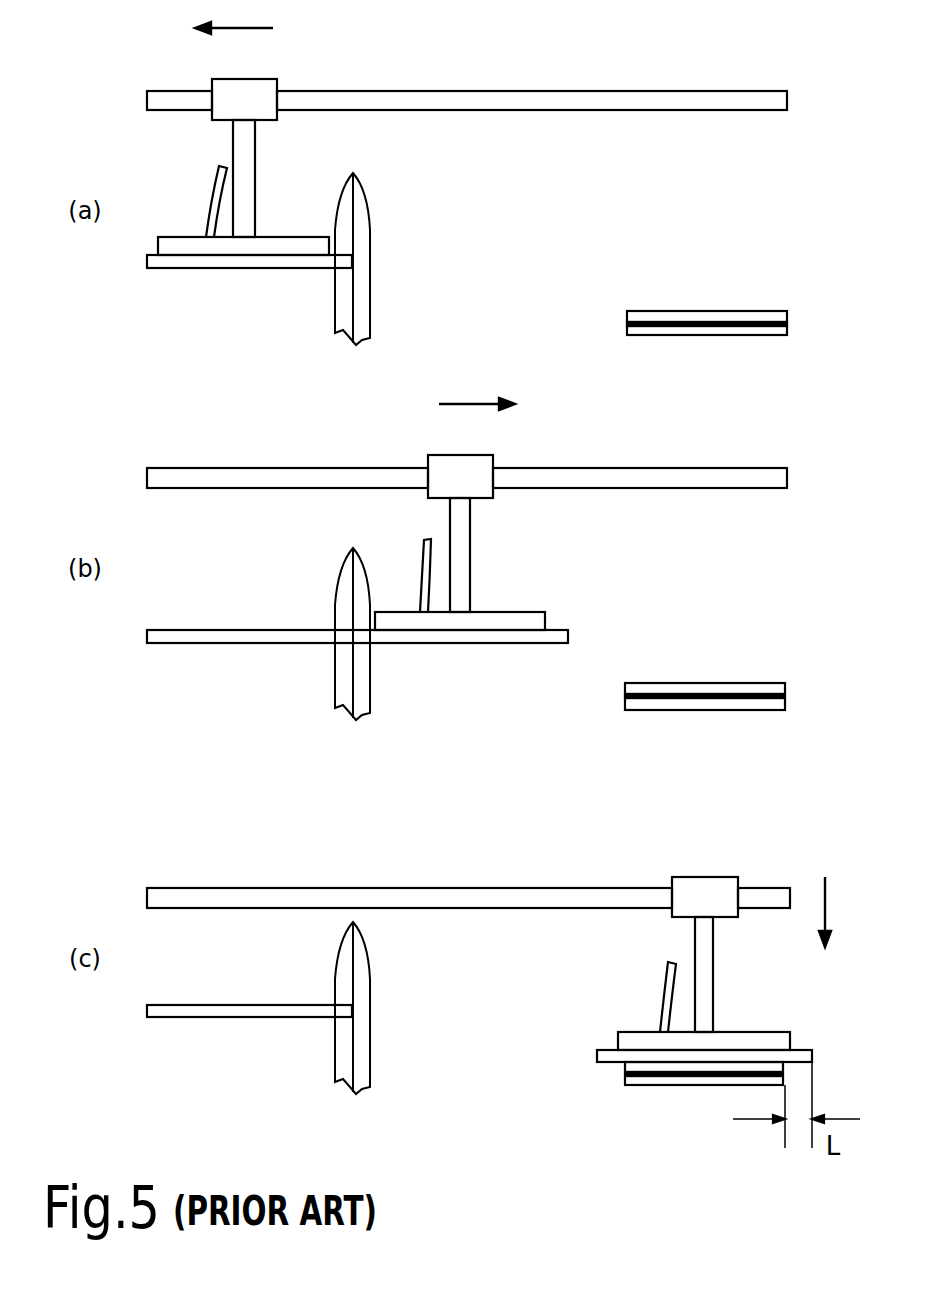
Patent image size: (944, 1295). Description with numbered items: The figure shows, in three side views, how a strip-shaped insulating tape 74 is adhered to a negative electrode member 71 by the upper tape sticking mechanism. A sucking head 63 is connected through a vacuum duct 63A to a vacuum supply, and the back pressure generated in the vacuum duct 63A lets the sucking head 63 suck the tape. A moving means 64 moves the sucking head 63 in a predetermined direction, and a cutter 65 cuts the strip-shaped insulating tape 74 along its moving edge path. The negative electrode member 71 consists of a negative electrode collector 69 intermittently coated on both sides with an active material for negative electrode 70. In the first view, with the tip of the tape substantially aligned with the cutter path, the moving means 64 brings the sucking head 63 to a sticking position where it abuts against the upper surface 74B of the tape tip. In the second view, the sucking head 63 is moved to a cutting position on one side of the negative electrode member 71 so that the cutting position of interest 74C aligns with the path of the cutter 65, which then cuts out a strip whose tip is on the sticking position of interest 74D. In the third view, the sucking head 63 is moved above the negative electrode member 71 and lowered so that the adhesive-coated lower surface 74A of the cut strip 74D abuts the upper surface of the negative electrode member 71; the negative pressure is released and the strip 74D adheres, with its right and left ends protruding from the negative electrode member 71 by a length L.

The sucking head 63 is at (286, 243).
The vacuum duct 63A is at (209, 183).
The moving means 64 is at (295, 81).
The cutter 65 is at (359, 228).
The negative electrode collector 69 is at (627, 322).
The active material for negative electrode 70 is at (670, 730).
The negative electrode member 71 is at (650, 708).
The strip-shaped insulating tape 74 is at (306, 268).
The lower surface of the strip-shaped insulating tape 74A is at (175, 274).
The upper surface of the tip of the strip-shaped insulating tape 74B is at (172, 238).
The cutting position of interest 74C is at (344, 624).
The sticking position of interest 74D is at (460, 642).